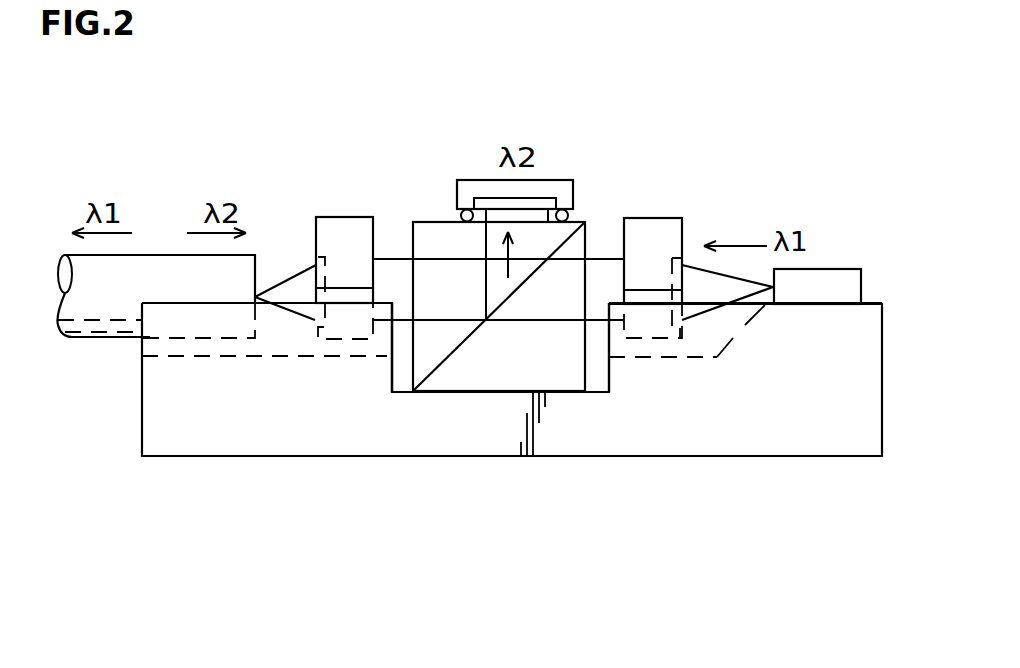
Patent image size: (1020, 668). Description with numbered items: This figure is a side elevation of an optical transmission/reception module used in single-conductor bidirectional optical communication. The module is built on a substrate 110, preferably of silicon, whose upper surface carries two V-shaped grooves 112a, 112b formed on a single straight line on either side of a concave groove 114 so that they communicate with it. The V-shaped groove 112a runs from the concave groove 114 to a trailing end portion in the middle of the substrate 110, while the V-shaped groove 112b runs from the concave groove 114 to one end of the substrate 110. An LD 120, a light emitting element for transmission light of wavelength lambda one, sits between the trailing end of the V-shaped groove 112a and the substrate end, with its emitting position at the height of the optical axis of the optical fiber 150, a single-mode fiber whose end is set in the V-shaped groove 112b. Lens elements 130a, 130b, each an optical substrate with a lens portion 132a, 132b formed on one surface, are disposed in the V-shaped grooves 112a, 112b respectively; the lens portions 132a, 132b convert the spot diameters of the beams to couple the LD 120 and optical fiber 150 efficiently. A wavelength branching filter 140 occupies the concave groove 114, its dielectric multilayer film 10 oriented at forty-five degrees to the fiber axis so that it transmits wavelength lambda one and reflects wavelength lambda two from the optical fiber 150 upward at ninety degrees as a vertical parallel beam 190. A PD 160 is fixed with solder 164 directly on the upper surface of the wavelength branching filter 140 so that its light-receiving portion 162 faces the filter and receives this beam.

The dielectric multilayer film 10 is at (450, 355).
The substrate 110 is at (782, 456).
The V-shaped groove 112a is at (697, 343).
The V-shaped groove 112b is at (272, 345).
The concave groove 114 is at (403, 375).
The LD 120 is at (842, 268).
The lens element 130a is at (648, 218).
The lens element 130b is at (342, 217).
The lens portion 132a is at (675, 281).
The lens portion 132b is at (317, 267).
The wavelength branching filter 140 is at (417, 221).
The optical fiber 150 is at (90, 337).
The PD 160 is at (550, 180).
The light-receiving portion 162 is at (492, 204).
The solder 164 is at (572, 214).
The vertical parallel beam 190 is at (486, 240).